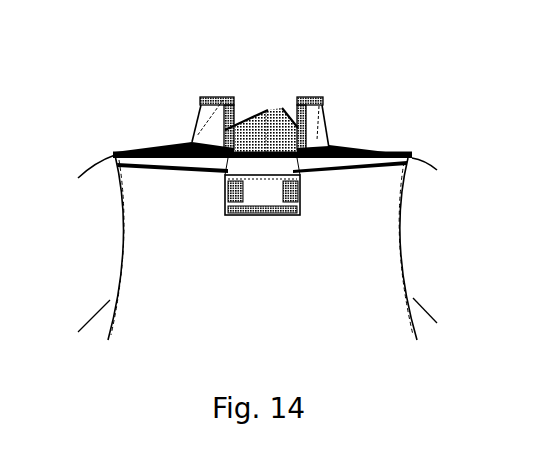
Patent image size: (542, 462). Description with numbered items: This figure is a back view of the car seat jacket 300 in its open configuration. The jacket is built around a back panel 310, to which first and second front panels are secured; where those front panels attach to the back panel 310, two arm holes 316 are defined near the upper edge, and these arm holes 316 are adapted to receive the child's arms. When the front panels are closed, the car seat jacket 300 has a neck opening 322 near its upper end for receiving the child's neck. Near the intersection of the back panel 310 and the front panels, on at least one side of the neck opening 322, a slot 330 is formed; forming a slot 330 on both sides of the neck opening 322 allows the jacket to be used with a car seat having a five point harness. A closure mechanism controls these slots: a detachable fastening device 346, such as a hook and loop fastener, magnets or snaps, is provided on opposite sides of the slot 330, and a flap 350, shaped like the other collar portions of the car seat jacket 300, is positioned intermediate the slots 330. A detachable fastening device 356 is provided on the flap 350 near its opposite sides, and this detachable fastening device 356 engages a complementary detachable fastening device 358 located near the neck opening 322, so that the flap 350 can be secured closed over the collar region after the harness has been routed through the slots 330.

The car seat jacket 300 is at (116, 108).
The back panel 310 is at (352, 333).
The arm holes 316 is at (127, 229).
The neck opening 322 is at (320, 104).
The slot 330 is at (187, 157).
The detachable fastening device 346 is at (224, 98).
The flap 350 is at (260, 208).
The detachable fastening device 356 is at (223, 195).
The complementary detachable fastening device 358 is at (266, 112).